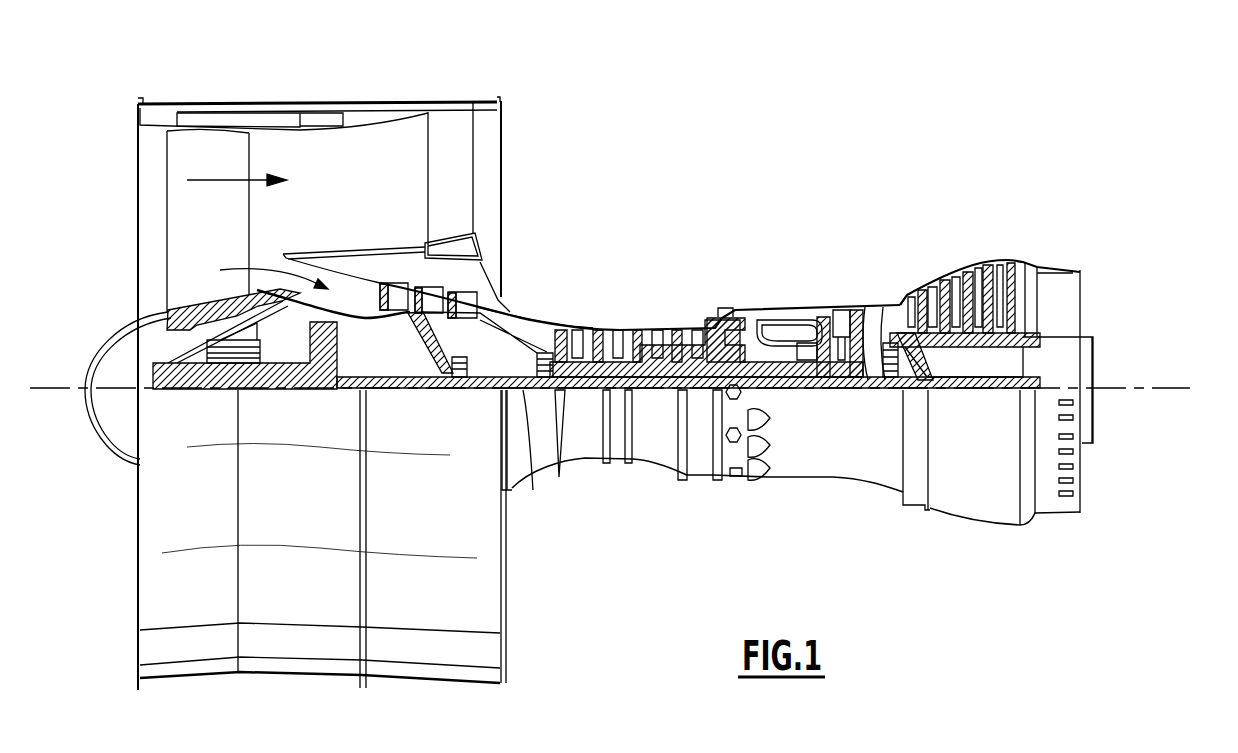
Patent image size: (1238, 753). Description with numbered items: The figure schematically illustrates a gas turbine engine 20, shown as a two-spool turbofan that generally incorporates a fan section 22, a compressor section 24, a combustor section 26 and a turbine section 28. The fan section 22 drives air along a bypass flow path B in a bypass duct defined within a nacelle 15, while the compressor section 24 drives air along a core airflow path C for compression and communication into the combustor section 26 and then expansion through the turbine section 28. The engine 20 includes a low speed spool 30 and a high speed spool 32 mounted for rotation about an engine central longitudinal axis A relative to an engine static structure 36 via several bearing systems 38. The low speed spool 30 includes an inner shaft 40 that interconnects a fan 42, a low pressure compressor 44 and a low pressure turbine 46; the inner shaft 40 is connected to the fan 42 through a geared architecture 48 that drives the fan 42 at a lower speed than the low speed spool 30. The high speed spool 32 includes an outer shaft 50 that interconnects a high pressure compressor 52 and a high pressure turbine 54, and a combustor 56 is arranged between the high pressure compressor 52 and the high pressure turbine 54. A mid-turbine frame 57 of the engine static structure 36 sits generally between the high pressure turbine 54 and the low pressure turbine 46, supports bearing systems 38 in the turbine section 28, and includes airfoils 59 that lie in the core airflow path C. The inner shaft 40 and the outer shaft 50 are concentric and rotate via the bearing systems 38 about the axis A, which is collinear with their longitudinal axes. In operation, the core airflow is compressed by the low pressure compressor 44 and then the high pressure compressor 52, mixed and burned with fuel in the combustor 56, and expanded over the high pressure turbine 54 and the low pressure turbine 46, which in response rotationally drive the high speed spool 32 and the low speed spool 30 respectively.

The nacelle 15 is at (320, 110).
The gas turbine engine 20 is at (781, 155).
The fan section 22 is at (249, 98).
The compressor section 24 is at (553, 294).
The combustor section 26 is at (774, 285).
The turbine section 28 is at (924, 249).
The low speed spool 30 is at (658, 400).
The high speed spool 32 is at (697, 352).
The engine static structure 36 is at (700, 486).
The bearing systems 38 is at (460, 373).
The inner shaft 40 is at (524, 400).
The fan 42 is at (225, 233).
The low pressure compressor 44 is at (420, 298).
The low pressure turbine 46 is at (967, 270).
The geared architecture 48 is at (327, 370).
The outer shaft 50 is at (777, 367).
The high pressure compressor 52 is at (633, 367).
The high pressure turbine 54 is at (836, 320).
The combustor 56 is at (777, 330).
The mid-turbine frame 57 is at (886, 296).
The airfoils 59 is at (882, 325).
The engine central longitudinal axis A is at (1173, 390).
The bypass flow path B is at (223, 180).
The core airflow path C is at (264, 270).